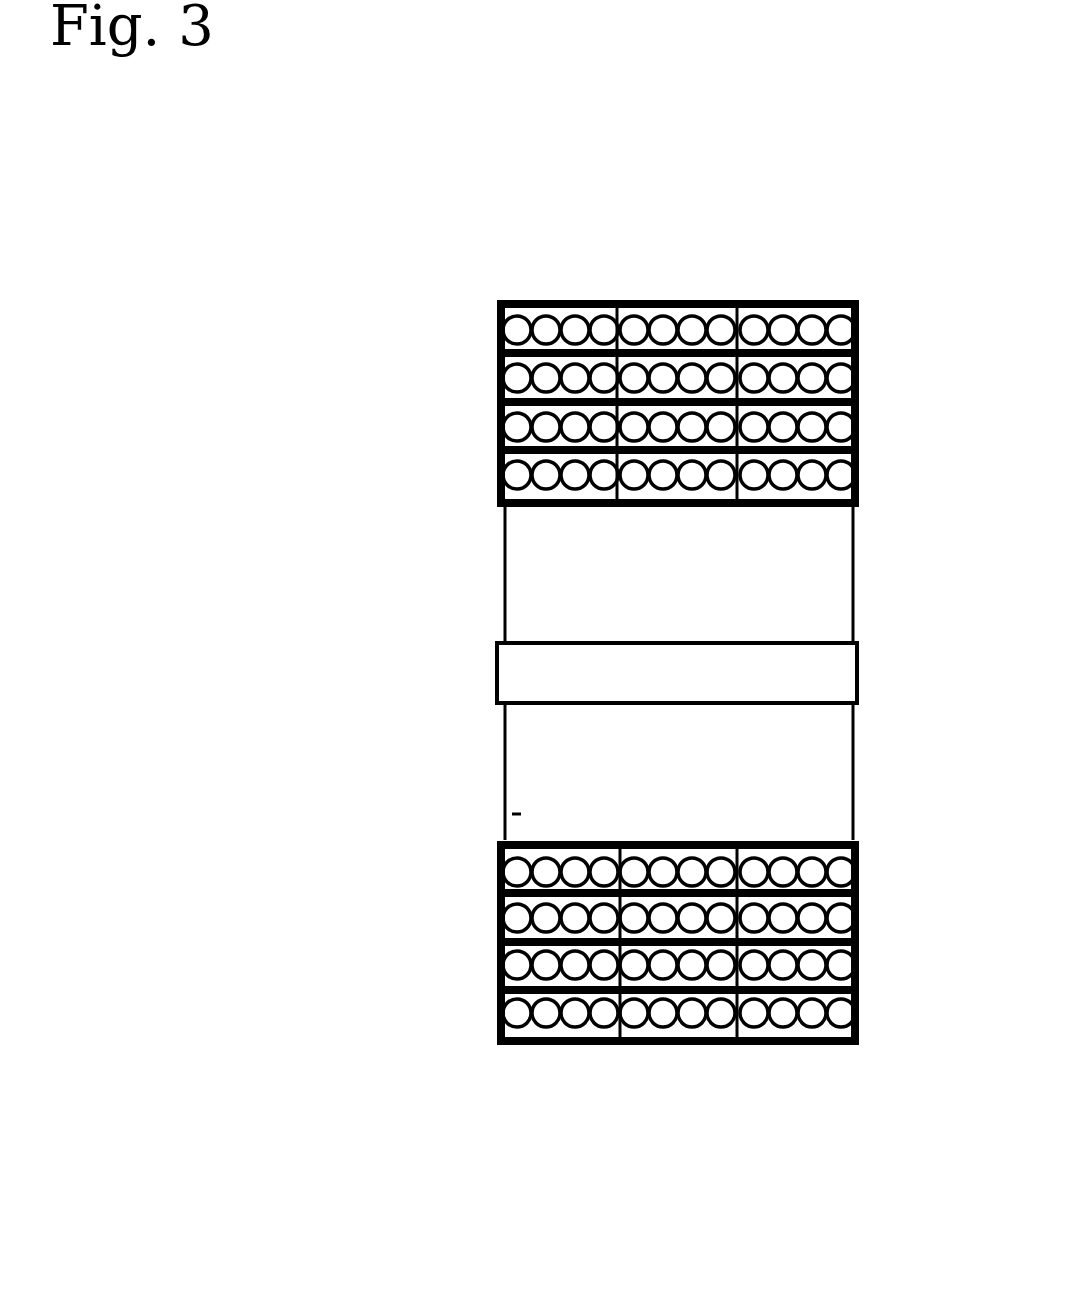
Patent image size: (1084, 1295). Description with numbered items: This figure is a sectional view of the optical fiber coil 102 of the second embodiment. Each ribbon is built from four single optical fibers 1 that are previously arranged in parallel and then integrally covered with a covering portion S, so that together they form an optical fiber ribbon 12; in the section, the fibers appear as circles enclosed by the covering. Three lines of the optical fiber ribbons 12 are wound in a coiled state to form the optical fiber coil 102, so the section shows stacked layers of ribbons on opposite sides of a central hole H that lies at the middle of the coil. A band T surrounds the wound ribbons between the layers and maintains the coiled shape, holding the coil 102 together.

The optical fiber coil 102 is at (672, 722).
The optical fiber ribbon 12 is at (660, 300).
The single optical fiber 1 is at (775, 322).
The covering portion S is at (858, 342).
The band T is at (858, 672).
The central hole H is at (500, 815).